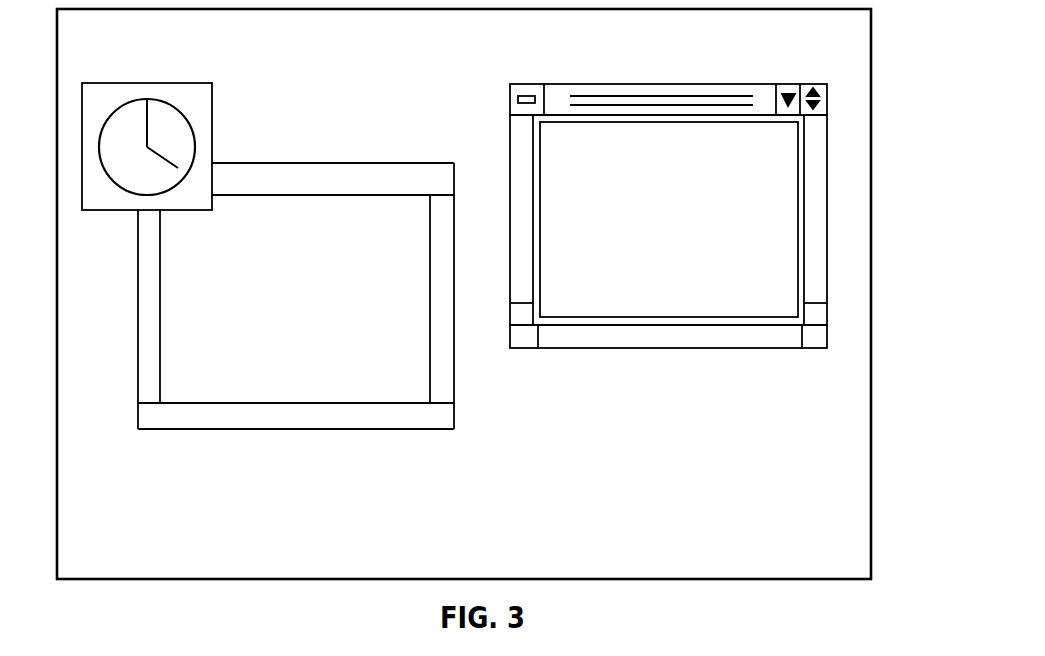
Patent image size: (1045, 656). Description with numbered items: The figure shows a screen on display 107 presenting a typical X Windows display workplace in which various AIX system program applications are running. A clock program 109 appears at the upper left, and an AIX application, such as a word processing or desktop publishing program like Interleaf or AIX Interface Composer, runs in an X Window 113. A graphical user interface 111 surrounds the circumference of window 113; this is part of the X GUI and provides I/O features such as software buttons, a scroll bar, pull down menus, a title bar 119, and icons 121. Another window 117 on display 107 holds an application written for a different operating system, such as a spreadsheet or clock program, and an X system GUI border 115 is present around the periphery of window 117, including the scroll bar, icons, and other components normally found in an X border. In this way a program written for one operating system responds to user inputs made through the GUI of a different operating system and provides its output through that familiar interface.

The display 107 is at (385, 48).
The clock program 109 is at (212, 115).
The graphical user interface 111 is at (137, 361).
The X Window 113 is at (253, 355).
The X system GUI border 115 is at (827, 117).
The window 117 is at (708, 272).
The title bar 119 is at (563, 84).
The icons 121 is at (522, 84).